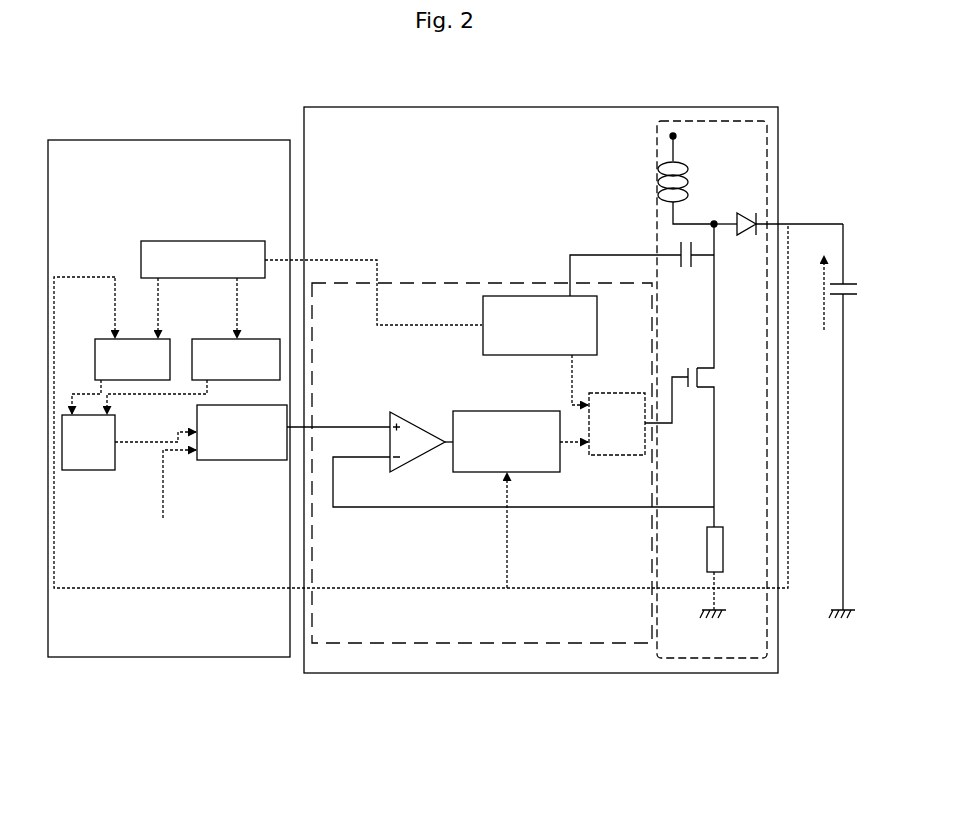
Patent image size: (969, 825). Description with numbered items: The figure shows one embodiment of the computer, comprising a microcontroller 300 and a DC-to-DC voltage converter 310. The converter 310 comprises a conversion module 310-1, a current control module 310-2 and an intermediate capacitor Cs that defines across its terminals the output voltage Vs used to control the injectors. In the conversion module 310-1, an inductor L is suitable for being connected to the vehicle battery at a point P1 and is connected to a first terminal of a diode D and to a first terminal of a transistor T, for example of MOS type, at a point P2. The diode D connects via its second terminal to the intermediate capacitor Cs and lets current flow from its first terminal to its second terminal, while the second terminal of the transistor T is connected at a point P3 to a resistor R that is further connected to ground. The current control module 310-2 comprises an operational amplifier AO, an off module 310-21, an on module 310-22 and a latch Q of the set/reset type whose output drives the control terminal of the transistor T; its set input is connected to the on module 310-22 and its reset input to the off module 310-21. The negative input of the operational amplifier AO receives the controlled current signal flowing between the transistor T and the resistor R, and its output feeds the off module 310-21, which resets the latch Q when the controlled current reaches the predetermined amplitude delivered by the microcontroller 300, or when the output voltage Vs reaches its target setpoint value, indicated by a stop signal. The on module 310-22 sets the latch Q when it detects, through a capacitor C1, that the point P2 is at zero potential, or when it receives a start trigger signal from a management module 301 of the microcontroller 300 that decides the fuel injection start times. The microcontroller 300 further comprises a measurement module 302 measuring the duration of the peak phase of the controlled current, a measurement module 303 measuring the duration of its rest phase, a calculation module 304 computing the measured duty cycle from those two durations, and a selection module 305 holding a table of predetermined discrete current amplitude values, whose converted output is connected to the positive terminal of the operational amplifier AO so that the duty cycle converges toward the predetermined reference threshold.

The microcontroller 300 is at (165, 140).
The management module 301 is at (298, 288).
The measurement module 302 is at (121, 376).
The measurement module 303 is at (193, 376).
The calculation module 304 is at (88, 442).
The selection module 305 is at (293, 432).
The DC-to-DC voltage converter 310 is at (575, 107).
The conversion module 310-1 is at (706, 353).
The current control module 310-2 is at (495, 345).
The off module 310-21 is at (520, 499).
The on module 310-22 is at (540, 350).
The operational amplifier AO is at (523, 459).
The latch Q is at (638, 416).
The inductor L is at (686, 178).
The diode D is at (778, 213).
The capacitor C1 is at (642, 270).
The transistor T is at (711, 365).
The resistor R is at (720, 578).
The intermediate capacitor Cs is at (849, 436).
The output voltage Vs is at (808, 293).
The point P1 is at (694, 138).
The point P2 is at (709, 212).
The point P3 is at (738, 507).